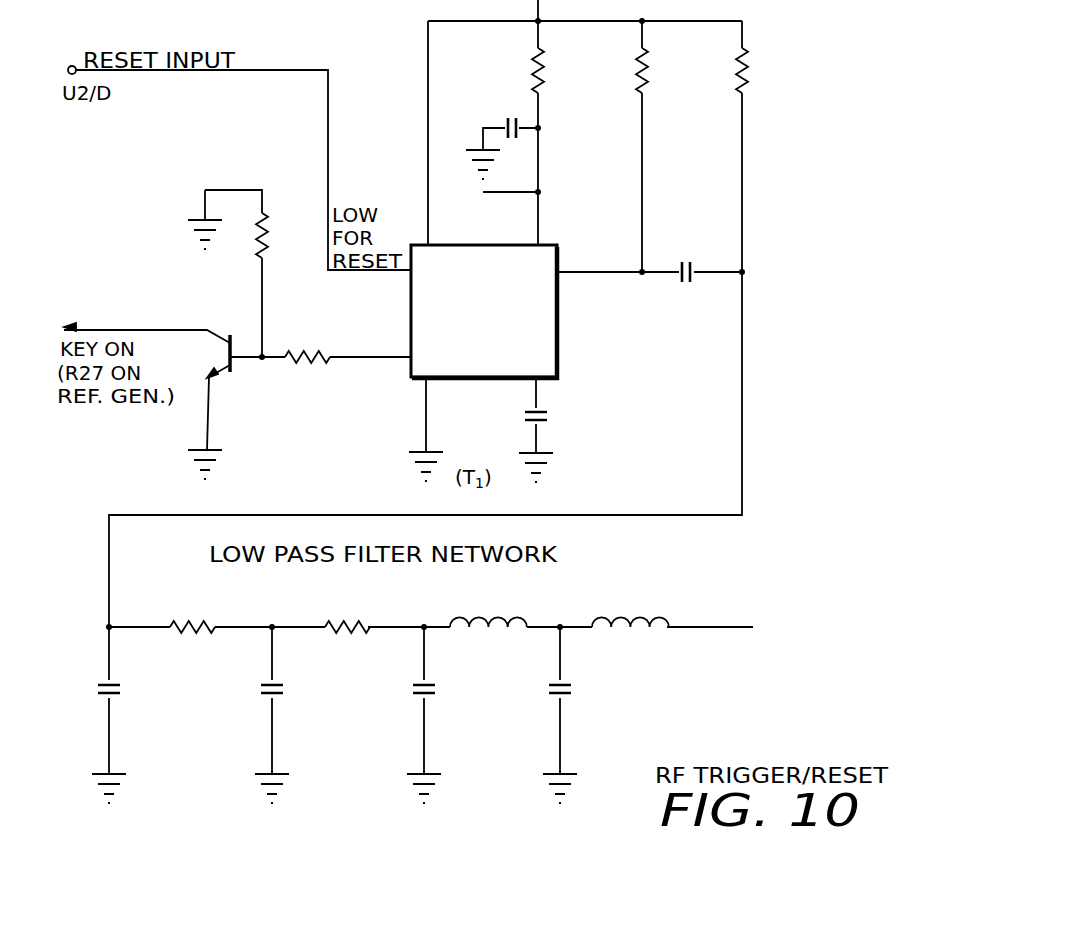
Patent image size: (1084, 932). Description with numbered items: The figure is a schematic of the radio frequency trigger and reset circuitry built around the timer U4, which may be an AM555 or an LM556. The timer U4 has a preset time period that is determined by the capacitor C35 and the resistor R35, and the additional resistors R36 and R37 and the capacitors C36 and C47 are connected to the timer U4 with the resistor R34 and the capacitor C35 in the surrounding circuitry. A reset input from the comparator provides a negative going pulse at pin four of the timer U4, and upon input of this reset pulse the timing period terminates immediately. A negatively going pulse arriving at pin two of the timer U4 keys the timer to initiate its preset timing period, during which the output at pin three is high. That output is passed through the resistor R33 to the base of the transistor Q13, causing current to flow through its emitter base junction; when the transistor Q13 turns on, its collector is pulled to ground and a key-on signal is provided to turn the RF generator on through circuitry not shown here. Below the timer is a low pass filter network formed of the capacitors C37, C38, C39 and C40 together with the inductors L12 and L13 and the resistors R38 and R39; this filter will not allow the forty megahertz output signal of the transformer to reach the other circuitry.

The timer U4 is at (483, 315).
The transistor Q13 is at (223, 382).
The resistor R33 is at (308, 364).
The resistor 10K R34 is at (285, 234).
The resistor R35 is at (560, 70).
The resistor R36 is at (664, 70).
The resistor 1K R37 is at (764, 73).
The resistor R38 is at (192, 613).
The resistor R39 is at (347, 613).
The capacitor C35 is at (502, 134).
The capacitor .1 C36 is at (685, 277).
The capacitor C37 is at (138, 695).
The capacitor C38 is at (300, 695).
The capacitor C39 is at (455, 695).
The capacitor C40 is at (590, 695).
The capacitor .01 C47 is at (559, 430).
The inductor L12 is at (488, 606).
The inductor L13 is at (630, 606).